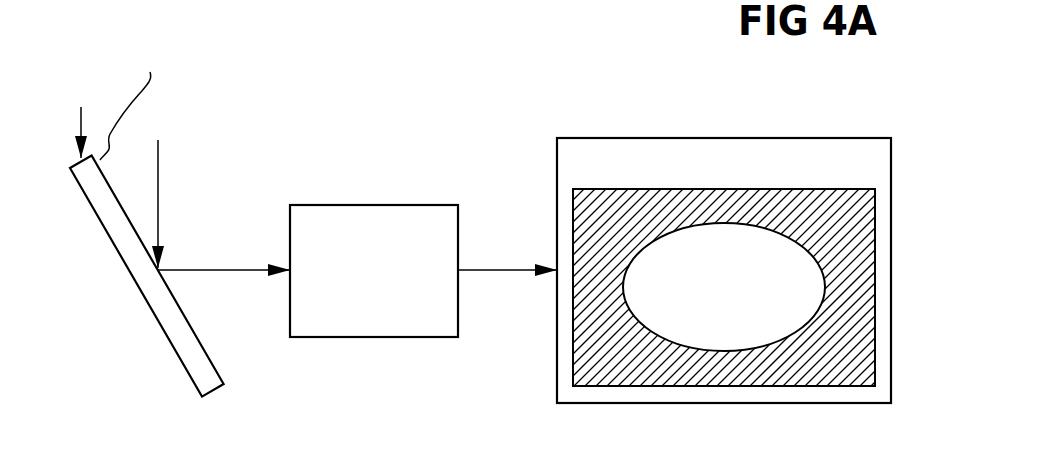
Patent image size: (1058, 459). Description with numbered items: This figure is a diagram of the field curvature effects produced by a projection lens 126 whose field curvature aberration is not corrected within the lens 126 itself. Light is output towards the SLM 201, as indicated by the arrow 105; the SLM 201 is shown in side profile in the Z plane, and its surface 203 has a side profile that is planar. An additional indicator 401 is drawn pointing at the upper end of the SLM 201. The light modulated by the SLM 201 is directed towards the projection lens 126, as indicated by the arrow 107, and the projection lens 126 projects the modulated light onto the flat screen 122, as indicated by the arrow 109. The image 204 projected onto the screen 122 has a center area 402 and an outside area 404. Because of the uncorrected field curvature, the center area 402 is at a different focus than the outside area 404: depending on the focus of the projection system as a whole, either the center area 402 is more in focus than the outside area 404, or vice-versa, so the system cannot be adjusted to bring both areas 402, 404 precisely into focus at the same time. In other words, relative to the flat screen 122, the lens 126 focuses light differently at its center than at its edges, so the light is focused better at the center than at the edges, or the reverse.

The light path indicator 401 is at (80, 122).
The surface 203 is at (125, 112).
The arrow 105 is at (159, 163).
The SLM 201 is at (158, 302).
The arrow 107 is at (223, 252).
The projection lens 126 is at (355, 308).
The arrow 109 is at (497, 270).
The screen 122 is at (881, 171).
The outside area 404 is at (866, 223).
The center area 402 is at (742, 300).
The image 204 is at (620, 387).